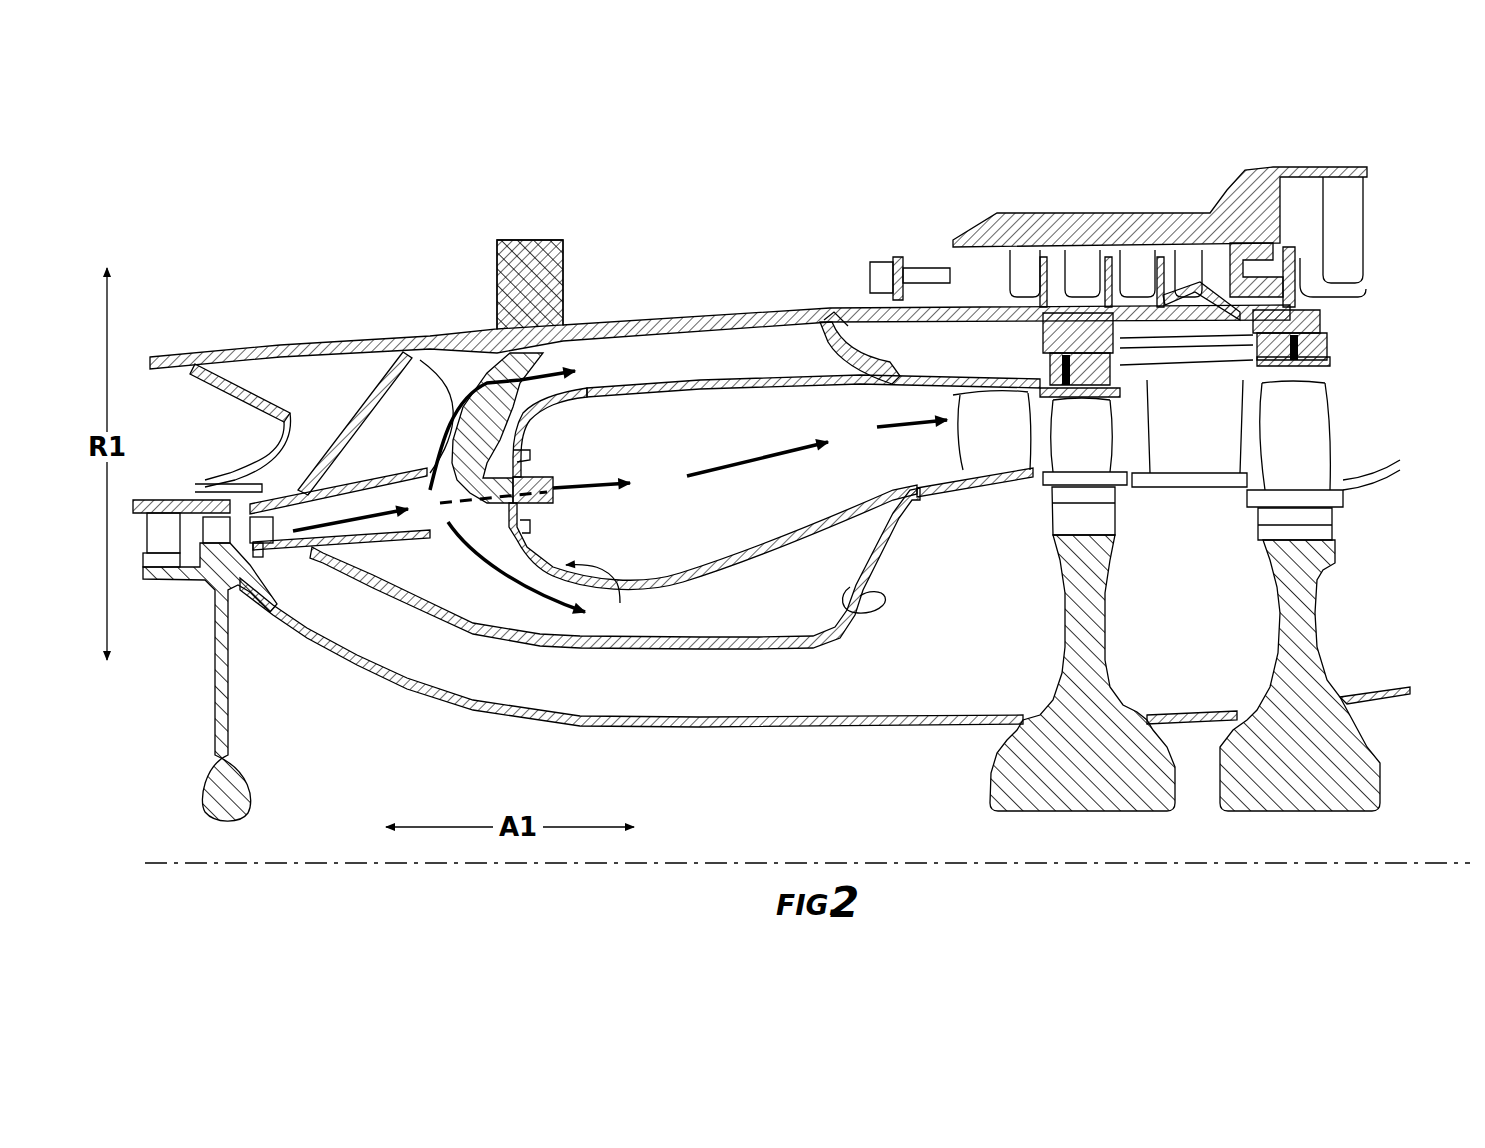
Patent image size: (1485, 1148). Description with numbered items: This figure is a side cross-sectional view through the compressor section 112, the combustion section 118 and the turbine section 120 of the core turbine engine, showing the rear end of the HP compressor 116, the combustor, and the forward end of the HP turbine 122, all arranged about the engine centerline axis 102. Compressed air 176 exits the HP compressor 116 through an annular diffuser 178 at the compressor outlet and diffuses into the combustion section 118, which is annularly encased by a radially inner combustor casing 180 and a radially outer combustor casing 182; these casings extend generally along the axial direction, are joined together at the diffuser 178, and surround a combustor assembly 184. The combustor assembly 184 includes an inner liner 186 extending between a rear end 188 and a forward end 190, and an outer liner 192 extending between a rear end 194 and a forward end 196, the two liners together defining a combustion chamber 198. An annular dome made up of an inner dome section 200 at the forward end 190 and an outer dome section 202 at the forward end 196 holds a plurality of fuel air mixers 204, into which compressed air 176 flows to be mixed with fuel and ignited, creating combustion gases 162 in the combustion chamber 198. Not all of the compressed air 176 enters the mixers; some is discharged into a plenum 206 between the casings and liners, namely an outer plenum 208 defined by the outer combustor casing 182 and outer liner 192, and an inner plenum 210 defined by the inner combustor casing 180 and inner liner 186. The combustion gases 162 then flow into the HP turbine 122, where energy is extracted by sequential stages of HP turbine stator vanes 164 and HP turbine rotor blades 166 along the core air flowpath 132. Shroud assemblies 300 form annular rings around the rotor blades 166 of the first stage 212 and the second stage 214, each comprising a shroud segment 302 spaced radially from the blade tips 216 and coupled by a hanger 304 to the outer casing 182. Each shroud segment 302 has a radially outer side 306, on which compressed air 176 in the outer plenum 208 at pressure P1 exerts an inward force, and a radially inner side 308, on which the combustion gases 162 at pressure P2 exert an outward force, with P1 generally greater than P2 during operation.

The engine centerline axis 102 is at (1328, 866).
The compressor section 112 is at (160, 342).
The HP compressor 116 is at (172, 588).
The combustion section 118 is at (703, 292).
The turbine section 120 is at (1277, 145).
The HP turbine 122 is at (1165, 533).
The core air flowpath 132 is at (932, 452).
The combustion gases 162 is at (745, 471).
The HP turbine stator vanes 164 is at (970, 461).
The HP turbine rotor blades 166 is at (1063, 450).
The compressed air 176 is at (457, 395).
The diffuser 178 is at (409, 610).
The radially inner combustor casing 180 is at (713, 650).
The radially outer combustor casing 182 is at (784, 310).
The combustor assembly 184 is at (603, 372).
The inner liner 186 is at (725, 567).
The rear end of inner liner 188 is at (893, 514).
The forward end of inner liner 190 is at (602, 597).
The outer liner 192 is at (725, 378).
The rear end of outer liner 194 is at (848, 368).
The forward end of outer liner 196 is at (558, 411).
The combustion chamber 198 is at (646, 537).
The inner dome section 200 is at (542, 548).
The outer dome section 202 is at (534, 438).
The fuel air mixers 204 is at (457, 400).
The plenum 206 is at (432, 586).
The outer plenum 208 is at (625, 375).
The inner plenum 210 is at (660, 620).
The first stage 212 is at (1037, 506).
The second stage 214 is at (1246, 500).
The blade tips 216 is at (1118, 403).
The shroud assembly 300 is at (1030, 327).
The shroud segment 302 is at (1122, 390).
The hanger 304 is at (1120, 318).
The radially outer side 306 is at (1074, 378).
The radially inner side 308 is at (1044, 394).
The pressure of compressed air in outer plenum P1 is at (1030, 364).
The pressure of combustion gases P2 is at (1043, 445).